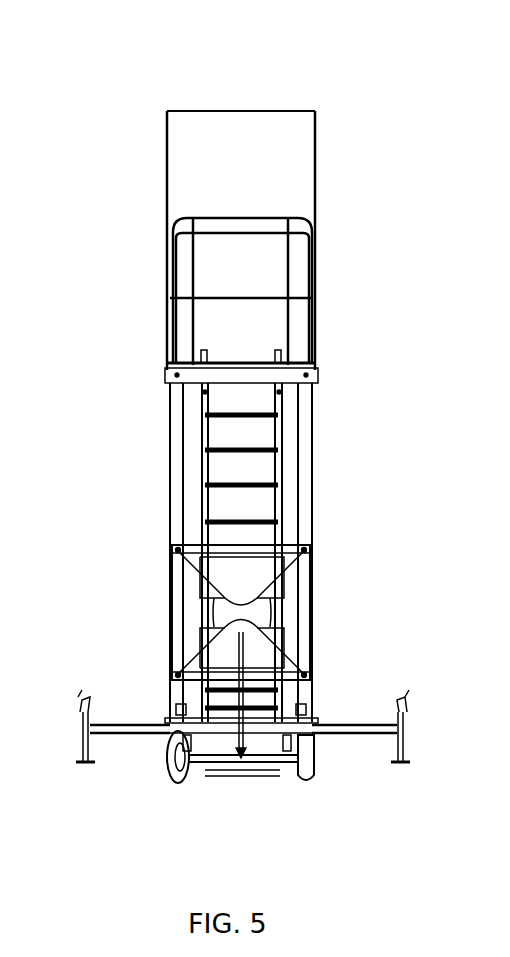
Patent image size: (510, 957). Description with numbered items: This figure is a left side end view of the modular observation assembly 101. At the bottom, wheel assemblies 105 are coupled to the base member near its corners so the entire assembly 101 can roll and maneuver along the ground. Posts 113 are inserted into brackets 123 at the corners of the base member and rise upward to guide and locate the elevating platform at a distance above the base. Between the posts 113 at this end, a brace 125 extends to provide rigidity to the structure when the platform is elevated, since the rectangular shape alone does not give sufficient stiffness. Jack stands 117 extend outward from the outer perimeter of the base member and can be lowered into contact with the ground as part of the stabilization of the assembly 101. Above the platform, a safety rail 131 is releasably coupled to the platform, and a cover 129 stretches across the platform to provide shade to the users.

The assembly 101 is at (313, 44).
The cover 129 is at (186, 112).
The safety rail 131 is at (290, 218).
The posts 113 is at (172, 508).
The braces 125 is at (237, 614).
The jack stands 117 is at (65, 725).
The brackets 123 is at (318, 710).
The wheel assemblies 105 is at (200, 795).